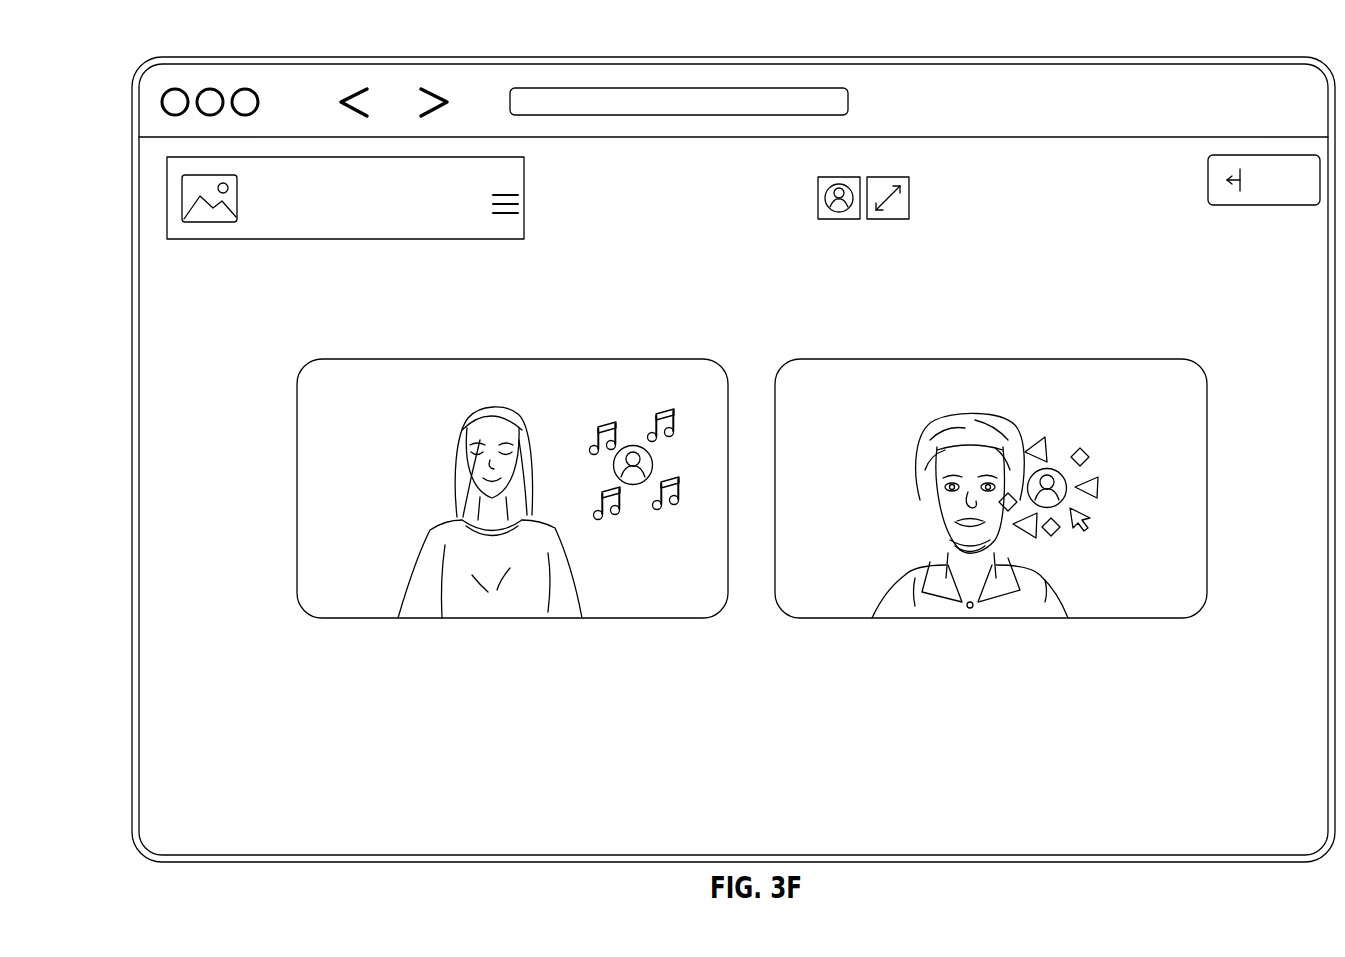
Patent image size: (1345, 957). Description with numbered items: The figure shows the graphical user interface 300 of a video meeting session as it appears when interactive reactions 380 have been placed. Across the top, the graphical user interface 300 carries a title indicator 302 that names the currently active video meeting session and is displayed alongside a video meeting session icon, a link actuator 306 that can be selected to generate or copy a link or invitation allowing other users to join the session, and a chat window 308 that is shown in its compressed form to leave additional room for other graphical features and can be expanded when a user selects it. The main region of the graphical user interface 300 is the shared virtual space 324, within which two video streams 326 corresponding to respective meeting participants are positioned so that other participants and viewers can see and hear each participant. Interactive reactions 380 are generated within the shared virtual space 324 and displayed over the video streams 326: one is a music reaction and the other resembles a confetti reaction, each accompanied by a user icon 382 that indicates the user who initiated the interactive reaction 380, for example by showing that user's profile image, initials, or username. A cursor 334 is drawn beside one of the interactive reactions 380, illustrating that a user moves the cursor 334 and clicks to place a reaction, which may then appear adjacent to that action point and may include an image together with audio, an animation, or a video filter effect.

The graphical user interface 300 is at (701, 441).
The title indicator 302 is at (179, 189).
The link actuator 306 is at (885, 175).
The chat window 308 is at (1208, 181).
The shared virtual space 324 is at (168, 451).
The video stream 326 is at (626, 358).
The cursor 334 is at (1090, 512).
The interactive reaction 380 is at (599, 412).
The user icon 382 is at (633, 445).